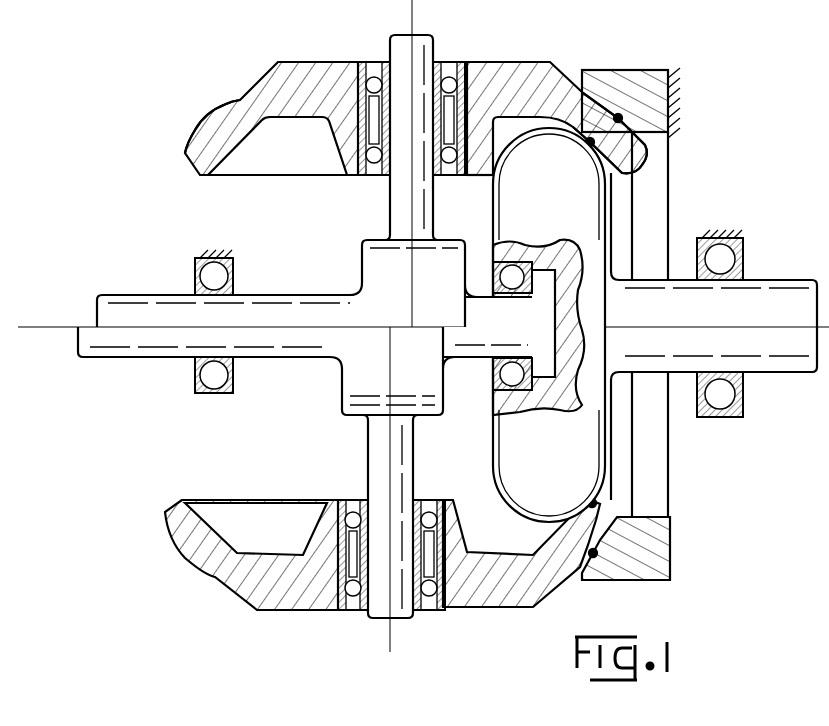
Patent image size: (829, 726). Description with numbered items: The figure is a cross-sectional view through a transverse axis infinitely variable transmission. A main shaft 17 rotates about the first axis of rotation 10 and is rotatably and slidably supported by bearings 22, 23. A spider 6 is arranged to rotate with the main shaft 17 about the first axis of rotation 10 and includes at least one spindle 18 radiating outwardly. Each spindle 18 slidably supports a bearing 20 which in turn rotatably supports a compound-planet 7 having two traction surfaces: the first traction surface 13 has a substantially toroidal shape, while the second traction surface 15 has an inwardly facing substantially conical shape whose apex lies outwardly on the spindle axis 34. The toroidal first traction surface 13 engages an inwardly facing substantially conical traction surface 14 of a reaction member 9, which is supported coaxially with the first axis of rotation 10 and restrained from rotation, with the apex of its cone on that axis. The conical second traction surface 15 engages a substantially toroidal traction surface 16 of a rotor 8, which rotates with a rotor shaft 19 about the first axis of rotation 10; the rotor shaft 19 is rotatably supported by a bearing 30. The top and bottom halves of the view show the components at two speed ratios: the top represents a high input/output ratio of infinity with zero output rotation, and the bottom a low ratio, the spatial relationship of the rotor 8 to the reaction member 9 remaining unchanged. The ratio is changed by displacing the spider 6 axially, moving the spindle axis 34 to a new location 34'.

The spider 6 is at (362, 270).
The compound-planet 7 is at (293, 68).
The rotor 8 is at (502, 480).
The reaction member 9 is at (640, 70).
The first axis of rotation 10 is at (48, 327).
The first traction surface 13 is at (197, 140).
The traction surface of the reaction member 14 is at (577, 82).
The second traction surface 15 is at (222, 174).
The traction surface of the rotor 16 is at (490, 178).
The main shaft 17 is at (142, 357).
The spindle 18 is at (392, 46).
The rotor shaft 19 is at (776, 372).
The bearing 20 is at (467, 64).
The bearing 22 is at (233, 388).
The bearing 23 is at (492, 408).
The bearing 30 is at (744, 250).
The spindle axis 34 is at (441, 163).
The new location of the spindle axis 34' is at (369, 493).